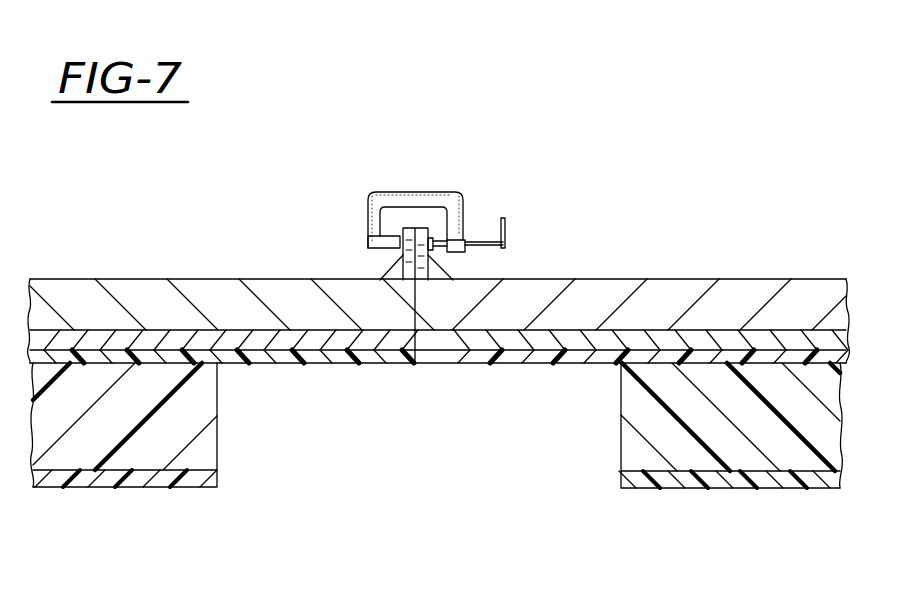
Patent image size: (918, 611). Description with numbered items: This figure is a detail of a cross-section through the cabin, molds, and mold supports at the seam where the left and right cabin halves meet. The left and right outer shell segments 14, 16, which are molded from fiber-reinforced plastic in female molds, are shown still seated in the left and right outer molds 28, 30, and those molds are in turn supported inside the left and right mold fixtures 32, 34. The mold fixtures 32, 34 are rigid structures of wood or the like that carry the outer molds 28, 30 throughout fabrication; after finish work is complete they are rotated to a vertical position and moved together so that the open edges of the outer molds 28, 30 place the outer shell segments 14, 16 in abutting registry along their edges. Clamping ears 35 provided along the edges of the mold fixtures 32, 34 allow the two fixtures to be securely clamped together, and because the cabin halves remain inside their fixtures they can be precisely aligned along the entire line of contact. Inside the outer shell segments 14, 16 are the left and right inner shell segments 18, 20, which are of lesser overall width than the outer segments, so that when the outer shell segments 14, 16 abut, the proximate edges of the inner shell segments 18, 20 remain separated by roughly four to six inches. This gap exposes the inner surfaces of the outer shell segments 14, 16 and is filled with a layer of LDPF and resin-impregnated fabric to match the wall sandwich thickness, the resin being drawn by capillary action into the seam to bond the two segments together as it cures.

The left outer shell segment 14 is at (569, 363).
The right outer shell segment 16 is at (335, 365).
The left inner shell segment 18 is at (617, 482).
The right inner shell segment 20 is at (212, 474).
The left outer mold 28 is at (745, 338).
The right outer mold 30 is at (257, 338).
The left mold fixture 32 is at (620, 297).
The right mold fixture 34 is at (352, 298).
The clamping ears 35 is at (457, 223).